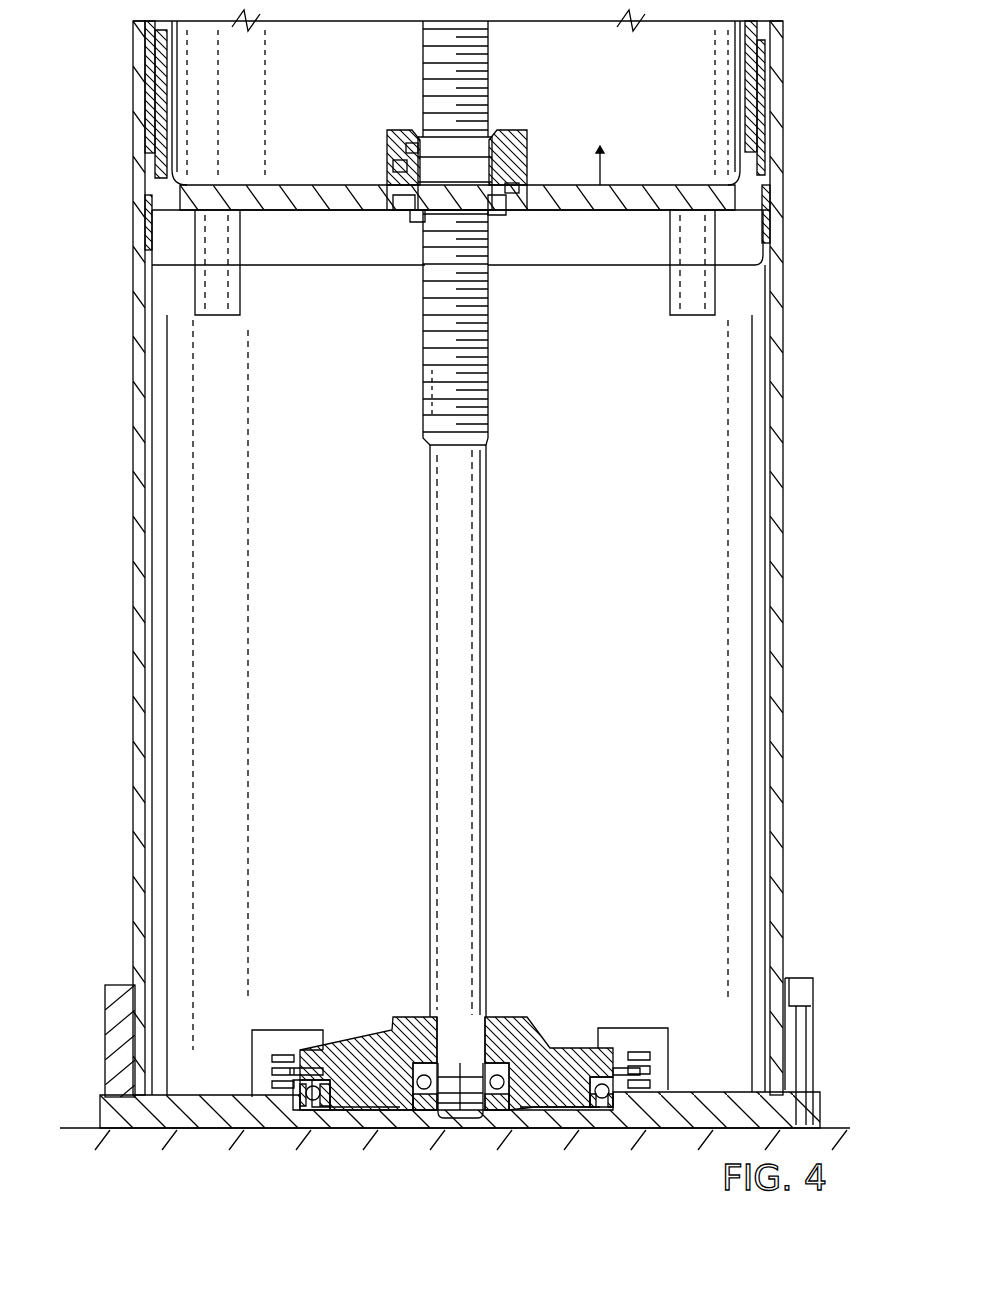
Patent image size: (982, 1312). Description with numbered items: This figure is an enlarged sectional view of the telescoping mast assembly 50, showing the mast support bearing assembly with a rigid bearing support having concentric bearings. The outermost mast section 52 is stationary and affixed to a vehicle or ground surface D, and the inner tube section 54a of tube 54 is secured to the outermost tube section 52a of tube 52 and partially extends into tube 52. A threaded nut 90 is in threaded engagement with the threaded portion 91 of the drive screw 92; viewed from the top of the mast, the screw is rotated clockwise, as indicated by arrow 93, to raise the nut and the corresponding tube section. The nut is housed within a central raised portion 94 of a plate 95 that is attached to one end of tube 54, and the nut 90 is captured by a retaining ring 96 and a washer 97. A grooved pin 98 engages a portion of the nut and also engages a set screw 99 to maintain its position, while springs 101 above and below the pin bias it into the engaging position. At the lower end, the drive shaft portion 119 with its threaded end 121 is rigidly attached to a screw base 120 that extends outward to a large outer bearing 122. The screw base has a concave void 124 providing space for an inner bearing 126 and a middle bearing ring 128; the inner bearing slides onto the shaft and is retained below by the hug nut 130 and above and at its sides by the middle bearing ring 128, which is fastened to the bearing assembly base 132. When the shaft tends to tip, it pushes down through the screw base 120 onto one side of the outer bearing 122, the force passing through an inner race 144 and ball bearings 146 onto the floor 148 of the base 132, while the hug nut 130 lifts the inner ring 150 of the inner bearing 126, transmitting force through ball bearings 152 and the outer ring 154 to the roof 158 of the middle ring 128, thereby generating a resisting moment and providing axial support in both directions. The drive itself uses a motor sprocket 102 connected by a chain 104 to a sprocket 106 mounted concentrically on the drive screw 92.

The telescoping mast assembly 50 is at (115, 629).
The mast section 52 is at (130, 521).
The outermost tube section 52a is at (140, 443).
The mast section 54 is at (150, 38).
The inner tube section 54a is at (163, 88).
The sprocket 102 is at (148, 262).
The plate 95 is at (622, 212).
The threaded nut 90 is at (478, 140).
The central raised portion 94 is at (527, 148).
The grooved pin 98 is at (392, 166).
The set screw 99 is at (393, 202).
The washer 97 is at (418, 216).
The retaining ring 96 is at (498, 210).
The springs 101 is at (418, 142).
The threaded portion 91 is at (437, 296).
The drive screw 92 is at (490, 381).
The arrow 93 is at (455, 833).
The drive shaft portion 119 is at (476, 770).
The roof 158 is at (468, 1010).
The inner ring 150 is at (440, 1062).
The inner race 144 is at (330, 1060).
The middle bearing ring 128 is at (380, 1065).
The outer ring 154 is at (420, 1050).
The inner bearing 126 is at (505, 1050).
The screw base 120 is at (583, 1045).
The chain 104 is at (655, 1040).
The sprocket 106 is at (655, 1069).
The floor 148 is at (305, 1110).
The ball bearings 146 is at (340, 1110).
The ball bearings 152 is at (435, 1112).
The threaded end 121 is at (460, 1120).
The hug nut 130 is at (470, 1112).
The concave void 124 is at (510, 1105).
The outer bearing 122 is at (610, 1107).
The bearing assembly base 132 is at (200, 1130).
The ground surface D is at (100, 1128).